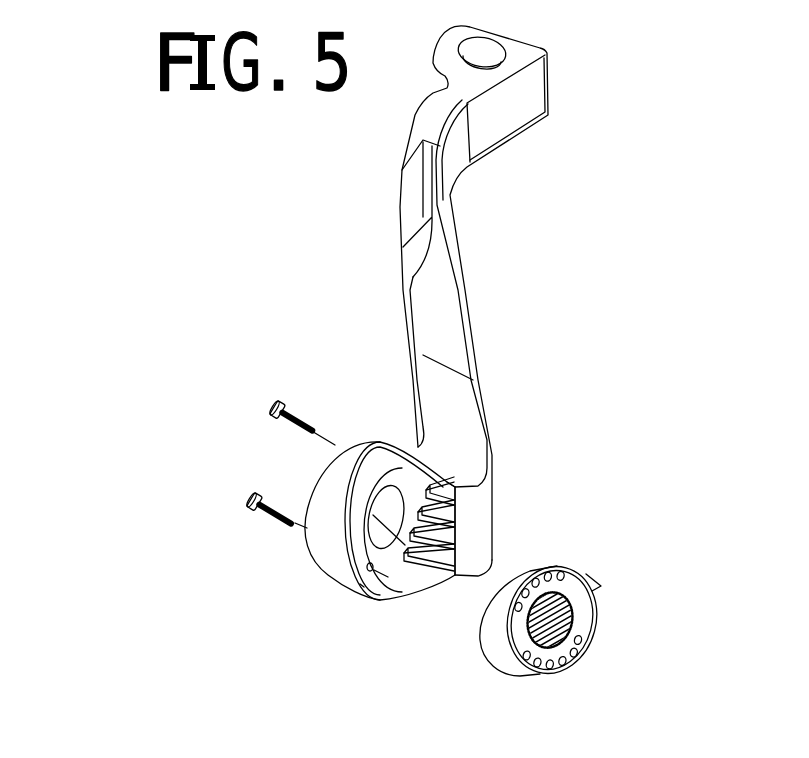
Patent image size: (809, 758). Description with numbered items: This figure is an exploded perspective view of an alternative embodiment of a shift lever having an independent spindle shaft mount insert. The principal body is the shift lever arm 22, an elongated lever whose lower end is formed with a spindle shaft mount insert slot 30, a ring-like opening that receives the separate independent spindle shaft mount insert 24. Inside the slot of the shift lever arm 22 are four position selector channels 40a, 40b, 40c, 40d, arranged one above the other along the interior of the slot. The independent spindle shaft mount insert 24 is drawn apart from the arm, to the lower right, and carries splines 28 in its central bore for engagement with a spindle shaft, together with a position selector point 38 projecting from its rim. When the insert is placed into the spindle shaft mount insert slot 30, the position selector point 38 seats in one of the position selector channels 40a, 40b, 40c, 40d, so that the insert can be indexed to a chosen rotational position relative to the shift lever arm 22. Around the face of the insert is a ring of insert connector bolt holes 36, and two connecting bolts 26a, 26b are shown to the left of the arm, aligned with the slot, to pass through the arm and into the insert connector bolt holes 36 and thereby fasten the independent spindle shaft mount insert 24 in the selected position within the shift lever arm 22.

The shift lever arm 22 is at (447, 333).
The independent spindle shaft mount insert 24 is at (584, 640).
The connecting bolt 26a is at (270, 405).
The connecting bolt 26b is at (250, 495).
The splines 28 is at (567, 625).
The spindle shaft mount insert slot 30 is at (400, 570).
The insert connector bolt holes 36 is at (532, 672).
The position selector point 38 is at (600, 587).
The position selector channel 40a is at (455, 498).
The position selector channel 40b is at (453, 520).
The position selector channel 40c is at (445, 547).
The position selector channel 40d is at (435, 563).